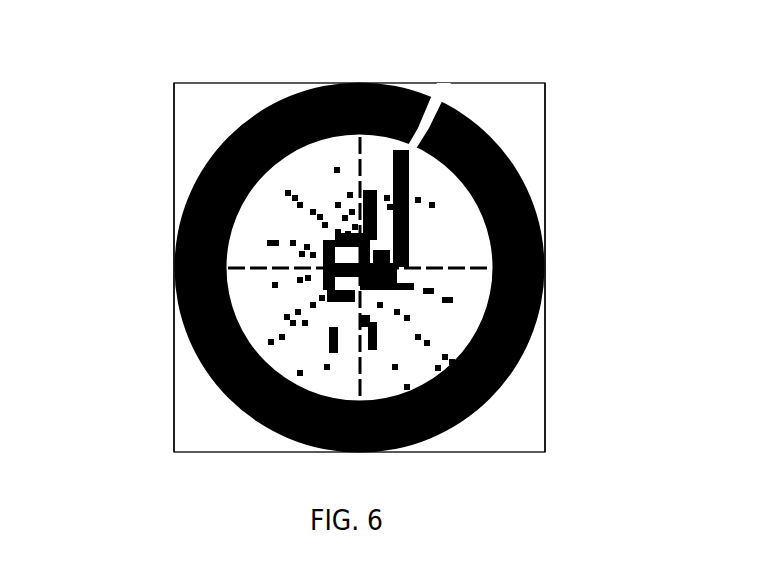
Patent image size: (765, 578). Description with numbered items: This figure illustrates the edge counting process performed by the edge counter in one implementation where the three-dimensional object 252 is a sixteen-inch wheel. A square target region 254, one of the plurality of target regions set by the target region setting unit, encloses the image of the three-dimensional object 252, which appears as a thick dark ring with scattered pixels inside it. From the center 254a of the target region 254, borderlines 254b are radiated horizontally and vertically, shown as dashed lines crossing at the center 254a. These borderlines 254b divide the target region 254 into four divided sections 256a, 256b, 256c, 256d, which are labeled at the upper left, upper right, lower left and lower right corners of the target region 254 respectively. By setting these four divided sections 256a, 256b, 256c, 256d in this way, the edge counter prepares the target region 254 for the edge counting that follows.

The three-dimensional object 252 is at (267, 93).
The target region 254 is at (228, 84).
The center 254a is at (366, 280).
The borderlines 254b is at (448, 265).
The divided section 256a is at (173, 175).
The divided section 256b is at (545, 182).
The divided section 256c is at (173, 367).
The divided section 256d is at (545, 352).